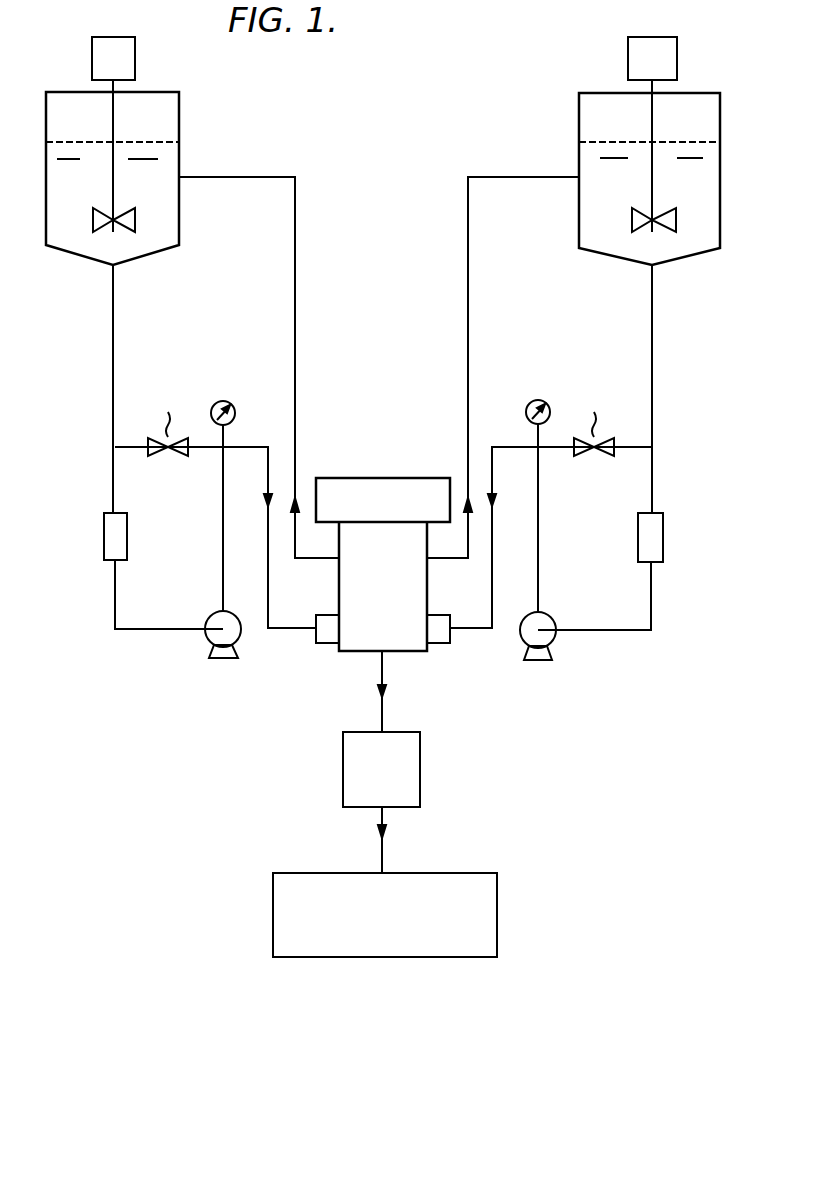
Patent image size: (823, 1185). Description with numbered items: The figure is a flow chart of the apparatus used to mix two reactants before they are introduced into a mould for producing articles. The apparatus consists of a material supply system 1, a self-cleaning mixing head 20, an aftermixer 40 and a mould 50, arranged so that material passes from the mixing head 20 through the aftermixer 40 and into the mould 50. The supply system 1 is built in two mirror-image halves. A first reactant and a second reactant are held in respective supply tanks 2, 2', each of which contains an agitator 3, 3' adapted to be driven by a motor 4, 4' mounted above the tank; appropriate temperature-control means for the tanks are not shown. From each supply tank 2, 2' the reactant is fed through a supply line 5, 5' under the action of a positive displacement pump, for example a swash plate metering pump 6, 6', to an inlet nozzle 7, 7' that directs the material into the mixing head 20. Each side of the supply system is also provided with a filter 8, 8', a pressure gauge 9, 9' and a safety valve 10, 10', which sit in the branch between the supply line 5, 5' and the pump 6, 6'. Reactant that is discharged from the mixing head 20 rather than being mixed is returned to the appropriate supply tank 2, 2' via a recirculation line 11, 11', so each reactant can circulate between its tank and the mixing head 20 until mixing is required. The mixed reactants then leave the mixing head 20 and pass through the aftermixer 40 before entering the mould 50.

The material supply system 1 is at (419, 118).
The supply tank 2 is at (134, 173).
The supply tank 2' is at (634, 156).
The agitator 3 is at (98, 156).
The agitator 3' is at (636, 156).
The motor 4 is at (136, 51).
The motor 4' is at (626, 45).
The supply line 5 is at (87, 389).
The supply line 5' is at (671, 389).
The swash plate metering pump 6 is at (196, 644).
The swash plate metering pump 6' is at (561, 652).
The inlet nozzle 7 is at (312, 649).
The inlet nozzle 7' is at (450, 649).
The filter 8 is at (131, 519).
The filter 8' is at (661, 560).
The pressure gauge 9 is at (236, 404).
The pressure gauge 9' is at (524, 405).
The safety valve 10 is at (175, 409).
The safety valve 10' is at (585, 458).
The recirculation line 11 is at (263, 367).
The recirculation line 11' is at (488, 367).
The self-cleaning mixing head 20 is at (410, 636).
The aftermixer 40 is at (368, 785).
The mould 50 is at (369, 927).